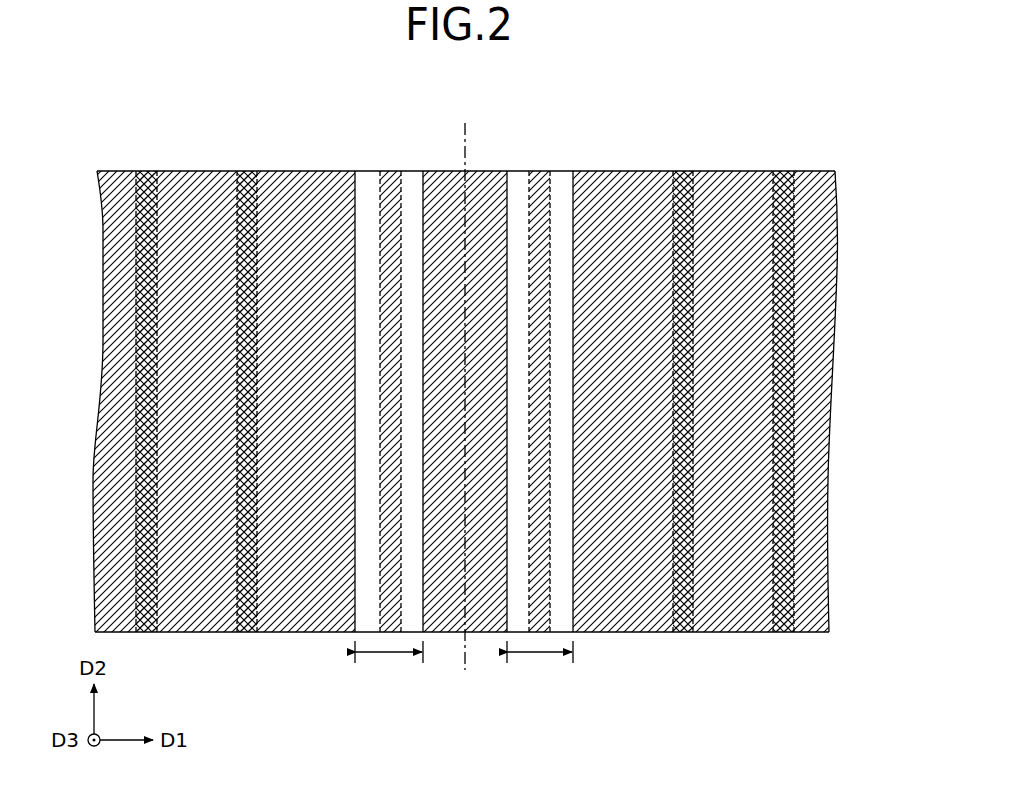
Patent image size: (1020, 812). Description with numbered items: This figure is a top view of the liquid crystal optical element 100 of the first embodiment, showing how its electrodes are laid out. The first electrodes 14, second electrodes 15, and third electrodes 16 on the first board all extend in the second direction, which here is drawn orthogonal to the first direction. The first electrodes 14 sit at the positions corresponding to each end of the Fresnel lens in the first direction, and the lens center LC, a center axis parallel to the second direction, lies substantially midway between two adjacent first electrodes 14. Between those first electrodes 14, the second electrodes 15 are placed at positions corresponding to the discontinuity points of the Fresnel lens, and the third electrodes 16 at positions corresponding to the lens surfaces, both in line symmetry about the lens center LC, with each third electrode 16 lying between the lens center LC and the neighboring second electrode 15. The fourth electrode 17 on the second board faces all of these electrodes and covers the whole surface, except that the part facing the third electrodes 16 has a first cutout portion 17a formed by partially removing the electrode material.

The liquid crystal optical element 100 is at (851, 125).
The first electrode 14 is at (152, 171).
The second electrode 15 is at (251, 171).
The third electrode 16 is at (396, 171).
The fourth electrode 17 is at (326, 171).
The first cutout portion 17a is at (371, 655).
The lens center LC is at (463, 655).